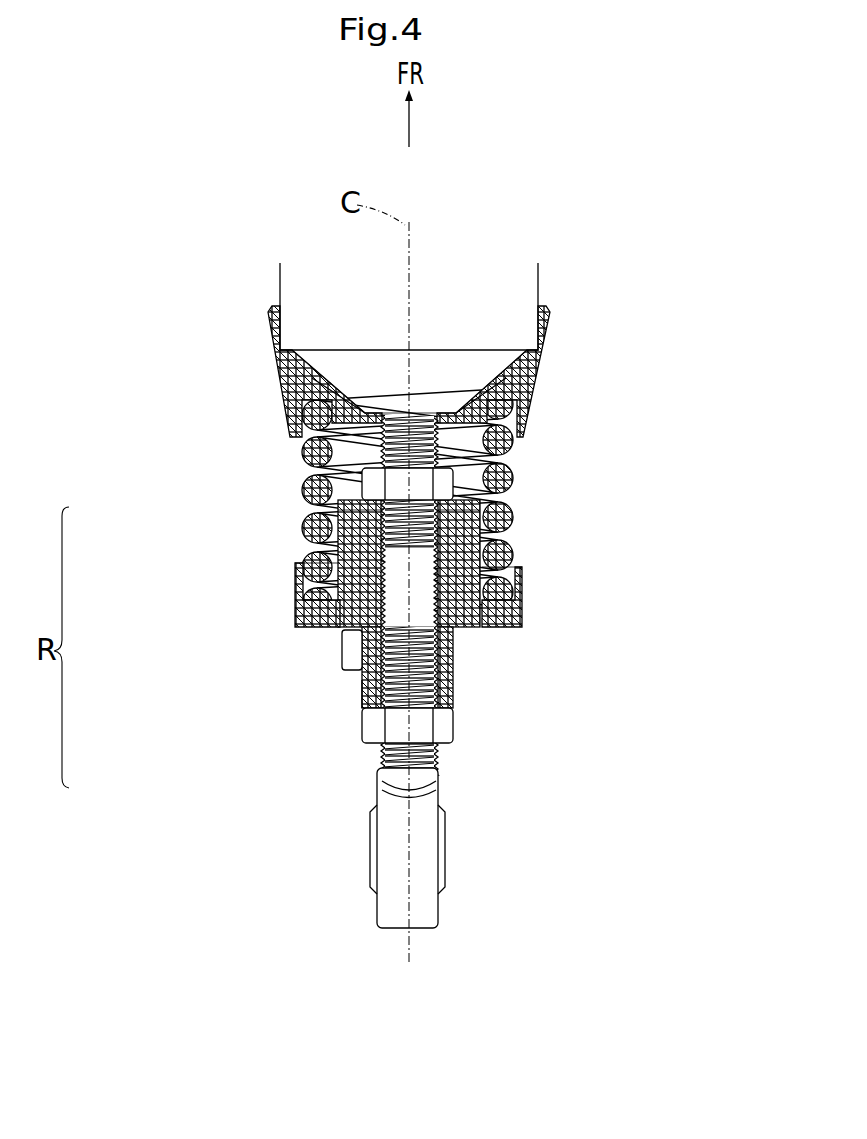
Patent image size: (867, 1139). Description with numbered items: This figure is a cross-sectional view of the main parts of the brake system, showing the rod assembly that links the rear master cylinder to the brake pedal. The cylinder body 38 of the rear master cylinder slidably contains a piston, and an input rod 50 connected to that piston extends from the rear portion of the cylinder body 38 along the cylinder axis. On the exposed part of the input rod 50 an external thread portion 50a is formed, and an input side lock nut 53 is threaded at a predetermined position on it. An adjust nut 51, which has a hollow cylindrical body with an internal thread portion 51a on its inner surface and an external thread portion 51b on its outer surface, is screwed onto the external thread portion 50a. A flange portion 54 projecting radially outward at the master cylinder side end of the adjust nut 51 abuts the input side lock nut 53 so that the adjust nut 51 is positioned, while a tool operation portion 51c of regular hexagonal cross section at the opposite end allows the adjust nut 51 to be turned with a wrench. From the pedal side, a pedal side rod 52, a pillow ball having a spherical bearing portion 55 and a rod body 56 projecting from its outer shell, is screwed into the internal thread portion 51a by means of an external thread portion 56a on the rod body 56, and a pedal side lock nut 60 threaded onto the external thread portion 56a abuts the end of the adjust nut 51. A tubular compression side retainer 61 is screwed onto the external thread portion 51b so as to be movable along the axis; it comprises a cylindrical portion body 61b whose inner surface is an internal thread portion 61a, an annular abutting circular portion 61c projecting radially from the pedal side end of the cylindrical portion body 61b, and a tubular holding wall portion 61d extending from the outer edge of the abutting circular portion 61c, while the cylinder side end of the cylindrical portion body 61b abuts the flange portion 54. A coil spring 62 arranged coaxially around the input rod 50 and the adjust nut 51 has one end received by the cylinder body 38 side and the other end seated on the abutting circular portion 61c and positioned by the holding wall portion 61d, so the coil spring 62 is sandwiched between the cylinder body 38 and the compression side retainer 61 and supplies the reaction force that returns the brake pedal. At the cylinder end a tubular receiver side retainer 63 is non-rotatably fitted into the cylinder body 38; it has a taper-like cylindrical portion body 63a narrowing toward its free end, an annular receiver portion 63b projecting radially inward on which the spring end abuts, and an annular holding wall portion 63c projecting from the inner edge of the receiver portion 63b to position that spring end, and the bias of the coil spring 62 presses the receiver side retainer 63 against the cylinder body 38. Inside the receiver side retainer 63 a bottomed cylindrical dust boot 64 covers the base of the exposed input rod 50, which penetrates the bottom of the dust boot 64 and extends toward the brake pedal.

The cylinder body 38 is at (540, 267).
The input rod 50 is at (291, 503).
The external thread portion 50a is at (332, 522).
The adjust nut 51 is at (333, 597).
The internal thread portion 51a is at (435, 574).
The external thread portion 51b is at (342, 635).
The tool operation portion 51c is at (362, 692).
The pedal side rod 52 is at (372, 754).
The input side lock nut 53 is at (345, 585).
The flange portion 54 is at (482, 512).
The spherical bearing portion 55 is at (430, 818).
The rod body 56 is at (458, 694).
The external thread portion 56a is at (458, 668).
The pedal side lock nut 60 is at (458, 720).
The compression side retainer 61 is at (409, 583).
The internal thread portion 61a is at (338, 552).
The cylindrical portion body 61b is at (296, 580).
The abutting circular portion 61c is at (523, 618).
The holding wall portion 61d is at (496, 578).
The coil spring 62 is at (446, 482).
The receiver side retainer 63 is at (391, 347).
The cylindrical portion body 63a is at (548, 378).
The receiver portion 63b is at (328, 385).
The holding wall portion 63c is at (353, 397).
The dust boot 64 is at (457, 368).